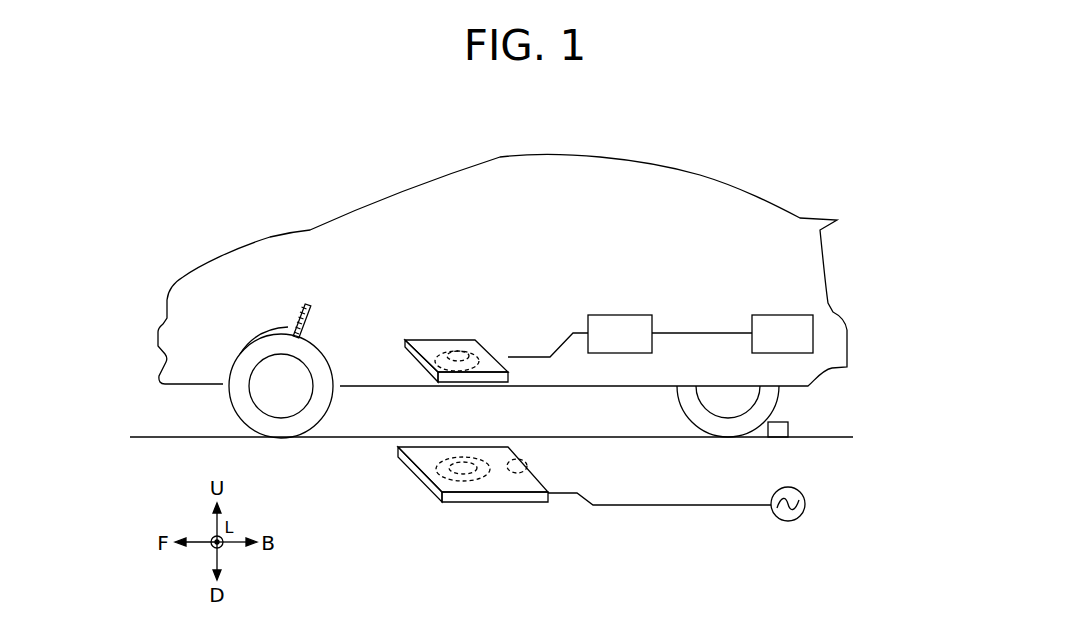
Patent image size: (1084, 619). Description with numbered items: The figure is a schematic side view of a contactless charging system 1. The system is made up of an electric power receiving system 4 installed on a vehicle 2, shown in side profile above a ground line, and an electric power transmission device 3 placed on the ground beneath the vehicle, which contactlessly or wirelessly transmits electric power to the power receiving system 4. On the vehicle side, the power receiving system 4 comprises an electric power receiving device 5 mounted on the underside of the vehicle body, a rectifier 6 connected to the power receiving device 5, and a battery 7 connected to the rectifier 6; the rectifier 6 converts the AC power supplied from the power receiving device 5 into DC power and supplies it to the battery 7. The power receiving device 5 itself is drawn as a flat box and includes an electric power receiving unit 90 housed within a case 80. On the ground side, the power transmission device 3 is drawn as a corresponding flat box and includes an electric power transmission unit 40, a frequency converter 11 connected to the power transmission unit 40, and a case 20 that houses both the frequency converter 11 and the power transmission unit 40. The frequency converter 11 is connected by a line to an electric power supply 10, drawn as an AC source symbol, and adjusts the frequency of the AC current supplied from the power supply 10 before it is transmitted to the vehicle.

The contactless charging system 1 is at (329, 175).
The vehicle 2 is at (541, 157).
The electric power transmission device 3 is at (410, 539).
The electric power receiving system 4 is at (803, 262).
The electric power receiving device 5 is at (433, 297).
The rectifier 6 is at (620, 315).
The battery 7 is at (783, 315).
The electric power supply 10 is at (787, 522).
The frequency converter 11 is at (523, 478).
The case 20 is at (484, 496).
The electric power transmission unit 40 is at (430, 495).
The case 80 is at (490, 340).
The electric power receiving unit 90 is at (452, 347).